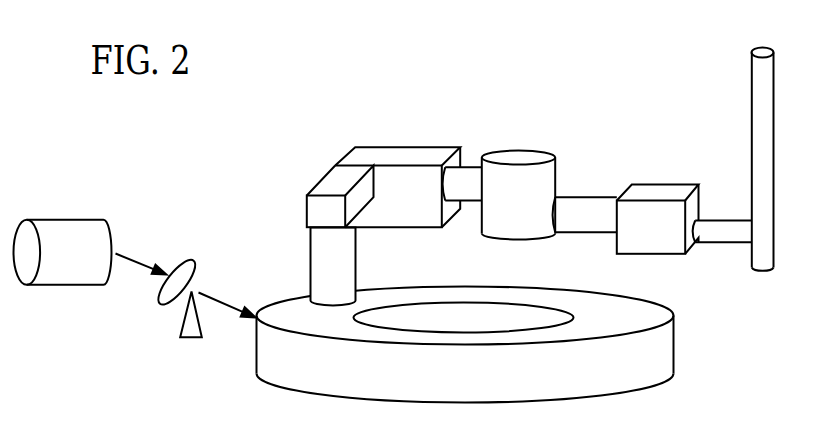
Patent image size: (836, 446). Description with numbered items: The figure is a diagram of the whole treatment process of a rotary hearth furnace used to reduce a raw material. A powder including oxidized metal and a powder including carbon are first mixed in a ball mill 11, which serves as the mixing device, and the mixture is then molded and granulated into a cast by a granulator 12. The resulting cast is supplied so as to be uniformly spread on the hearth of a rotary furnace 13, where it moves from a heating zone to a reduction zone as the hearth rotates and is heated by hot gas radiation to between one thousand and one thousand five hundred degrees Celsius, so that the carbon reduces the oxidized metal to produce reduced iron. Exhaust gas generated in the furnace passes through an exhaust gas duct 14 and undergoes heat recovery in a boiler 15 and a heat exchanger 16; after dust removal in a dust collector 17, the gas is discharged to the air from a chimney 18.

The ball mill 11 is at (50, 228).
The granulator 12 is at (183, 262).
The rotary furnace 13 is at (658, 353).
The exhaust gas duct 14 is at (317, 264).
The boiler 15 is at (380, 157).
The heat exchanger 16 is at (502, 170).
The dust collector 17 is at (657, 192).
The chimney 18 is at (758, 127).